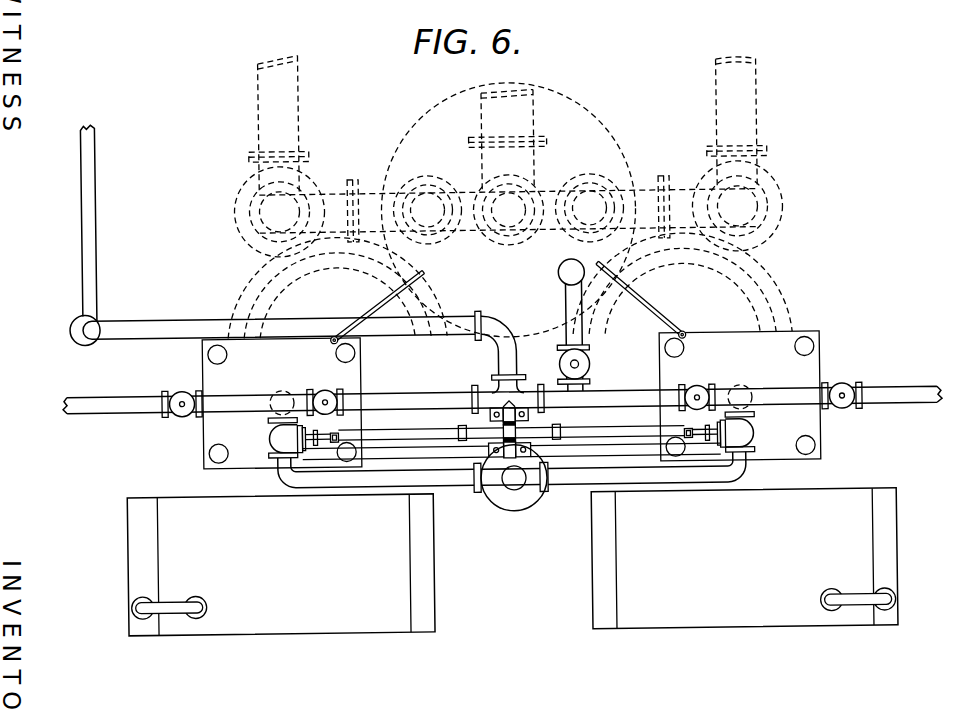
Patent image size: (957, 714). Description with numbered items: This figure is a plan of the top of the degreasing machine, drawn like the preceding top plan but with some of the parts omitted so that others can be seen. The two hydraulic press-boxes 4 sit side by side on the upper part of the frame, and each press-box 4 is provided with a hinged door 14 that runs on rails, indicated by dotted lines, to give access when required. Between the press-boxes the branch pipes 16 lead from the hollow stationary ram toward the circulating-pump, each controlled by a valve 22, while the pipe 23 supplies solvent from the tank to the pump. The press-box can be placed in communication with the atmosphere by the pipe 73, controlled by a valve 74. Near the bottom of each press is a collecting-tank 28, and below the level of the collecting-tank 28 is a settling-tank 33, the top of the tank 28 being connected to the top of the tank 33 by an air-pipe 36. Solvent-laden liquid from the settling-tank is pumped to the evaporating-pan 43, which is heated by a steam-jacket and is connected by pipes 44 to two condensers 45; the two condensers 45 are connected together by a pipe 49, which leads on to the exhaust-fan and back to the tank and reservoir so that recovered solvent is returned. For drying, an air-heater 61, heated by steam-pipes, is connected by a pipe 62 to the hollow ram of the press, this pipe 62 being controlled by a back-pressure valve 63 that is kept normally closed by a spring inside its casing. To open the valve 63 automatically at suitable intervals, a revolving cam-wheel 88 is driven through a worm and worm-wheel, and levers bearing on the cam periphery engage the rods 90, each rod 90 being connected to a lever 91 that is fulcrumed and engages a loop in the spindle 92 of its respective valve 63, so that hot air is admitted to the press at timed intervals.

The hydraulic press-box 4 is at (511, 400).
The hinged door 14 is at (508, 302).
The branch pipe 16 is at (510, 394).
The valve 22 is at (511, 391).
The pipe 23 is at (296, 259).
The collecting-tank 28 is at (512, 562).
The settling-tank 33 is at (514, 562).
The air-pipe 36 is at (514, 603).
The evaporating-pan 43 is at (509, 237).
The pipe 44 is at (679, 182).
The condenser 45 is at (796, 195).
The pipe 49 is at (507, 121).
The air-heater 61 is at (522, 508).
The pipe 62 is at (455, 486).
The back-pressure valve 63 is at (762, 436).
The pipe 73 is at (502, 393).
The valve 74 is at (512, 391).
The revolving cam-wheel 88 is at (517, 429).
The rod 90 is at (511, 438).
The lever 91 is at (340, 440).
The spindle 92 is at (514, 424).